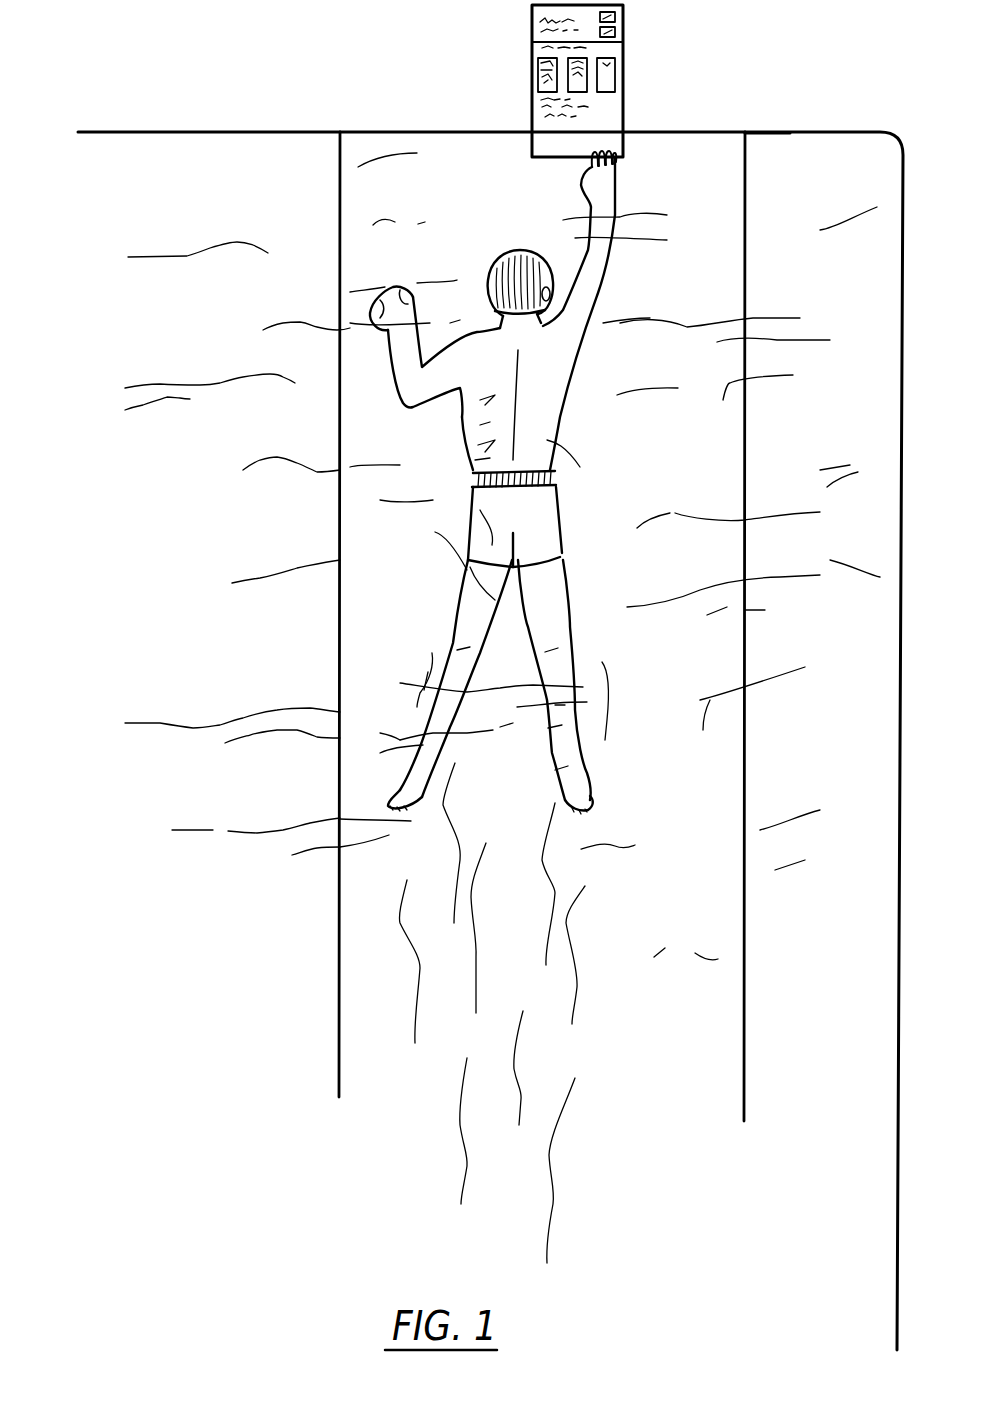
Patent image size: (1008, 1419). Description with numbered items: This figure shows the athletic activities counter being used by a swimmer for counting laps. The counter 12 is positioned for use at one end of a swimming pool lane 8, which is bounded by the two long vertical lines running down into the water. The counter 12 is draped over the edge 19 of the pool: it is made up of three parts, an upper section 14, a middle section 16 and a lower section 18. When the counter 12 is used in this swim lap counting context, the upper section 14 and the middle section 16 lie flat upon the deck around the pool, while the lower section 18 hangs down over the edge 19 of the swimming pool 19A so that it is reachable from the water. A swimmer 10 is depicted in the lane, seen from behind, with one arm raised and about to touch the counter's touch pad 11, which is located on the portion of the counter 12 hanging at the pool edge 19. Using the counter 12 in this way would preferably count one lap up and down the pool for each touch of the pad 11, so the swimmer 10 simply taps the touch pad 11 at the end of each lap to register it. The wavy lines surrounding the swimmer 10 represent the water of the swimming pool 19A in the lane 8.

The swimming pool lane 8 is at (340, 757).
The swimmer 10 is at (540, 413).
The touch pad 11 is at (627, 160).
The counter 12 is at (583, 81).
The upper section 14 is at (620, 23).
The middle section 16 is at (620, 107).
The lower section 18 is at (748, 135).
The edge of the pool 19 is at (325, 132).
The swimming pool 19A is at (200, 560).